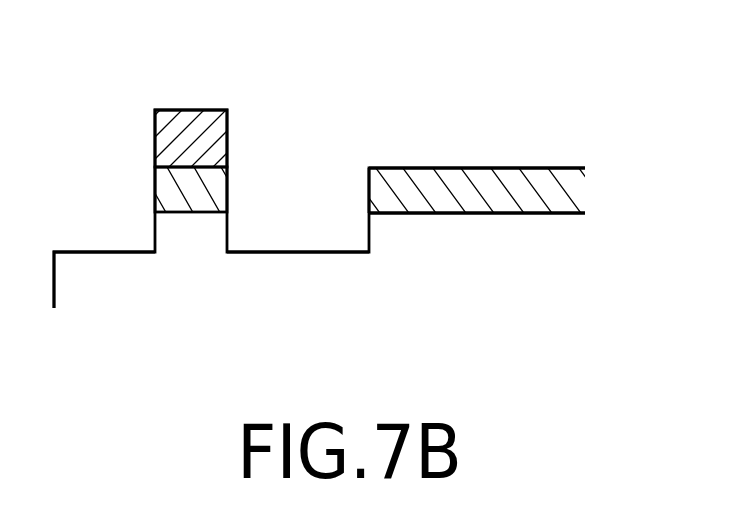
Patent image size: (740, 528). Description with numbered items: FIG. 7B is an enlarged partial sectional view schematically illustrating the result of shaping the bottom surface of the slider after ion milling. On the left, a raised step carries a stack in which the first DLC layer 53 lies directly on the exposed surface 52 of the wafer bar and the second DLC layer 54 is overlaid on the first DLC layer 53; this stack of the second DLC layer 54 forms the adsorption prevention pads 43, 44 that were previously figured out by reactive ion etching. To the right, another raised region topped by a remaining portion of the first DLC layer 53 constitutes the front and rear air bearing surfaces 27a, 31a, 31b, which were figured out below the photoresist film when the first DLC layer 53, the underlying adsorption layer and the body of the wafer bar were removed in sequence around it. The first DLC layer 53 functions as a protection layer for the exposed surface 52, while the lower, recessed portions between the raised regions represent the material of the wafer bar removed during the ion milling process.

The adsorption prevention pad 43 is at (220, 85).
The adsorption prevention pad 44 is at (220, 85).
The second DLC layer 54 is at (155, 140).
The first DLC layer 53 is at (155, 190).
The front air bearing surface 27a is at (494, 142).
The rear air bearing surface 31a is at (494, 142).
The rear air bearing surface 31b is at (452, 157).
The exposed surface 52 is at (538, 213).